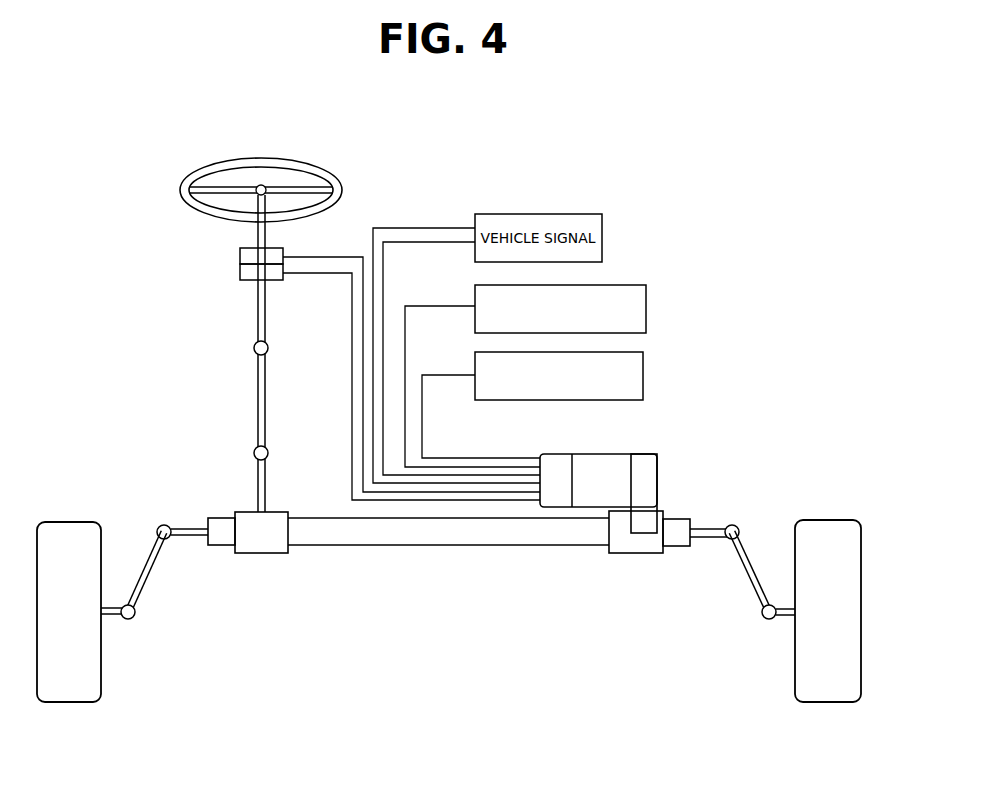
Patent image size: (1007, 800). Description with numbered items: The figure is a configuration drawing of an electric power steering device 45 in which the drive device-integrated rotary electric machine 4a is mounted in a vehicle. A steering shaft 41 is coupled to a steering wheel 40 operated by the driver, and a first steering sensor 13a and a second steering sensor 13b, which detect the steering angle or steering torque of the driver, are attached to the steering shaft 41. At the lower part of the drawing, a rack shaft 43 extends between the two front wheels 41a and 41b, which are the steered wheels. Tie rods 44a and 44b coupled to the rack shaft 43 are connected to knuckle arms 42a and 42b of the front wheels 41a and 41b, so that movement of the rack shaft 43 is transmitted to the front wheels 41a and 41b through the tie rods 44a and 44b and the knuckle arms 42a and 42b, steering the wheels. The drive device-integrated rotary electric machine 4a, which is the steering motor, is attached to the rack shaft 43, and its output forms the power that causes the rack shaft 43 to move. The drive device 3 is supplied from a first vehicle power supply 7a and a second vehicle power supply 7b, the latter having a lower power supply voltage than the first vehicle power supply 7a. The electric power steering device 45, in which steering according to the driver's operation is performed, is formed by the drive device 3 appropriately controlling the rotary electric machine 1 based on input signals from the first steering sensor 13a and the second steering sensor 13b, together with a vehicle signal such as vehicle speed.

The steering wheel 40 is at (342, 187).
The steering shaft 41 is at (257, 312).
The first steering sensor 13a is at (240, 253).
The second steering sensor 13b is at (240, 273).
The first vehicle power supply 7a is at (643, 377).
The second vehicle power supply 7b is at (646, 312).
The rotary electric machine 1 is at (600, 453).
The drive device 3 is at (552, 453).
The drive device-integrated rotary electric machine 4a is at (620, 453).
The rack shaft 43 is at (450, 545).
The electric power steering device 45 is at (535, 668).
The tie rod 44a is at (184, 522).
The tie rod 44b is at (712, 527).
The knuckle arm 42a is at (153, 572).
The knuckle arm 42b is at (743, 573).
The front wheel 41a is at (102, 657).
The front wheel 41b is at (795, 670).